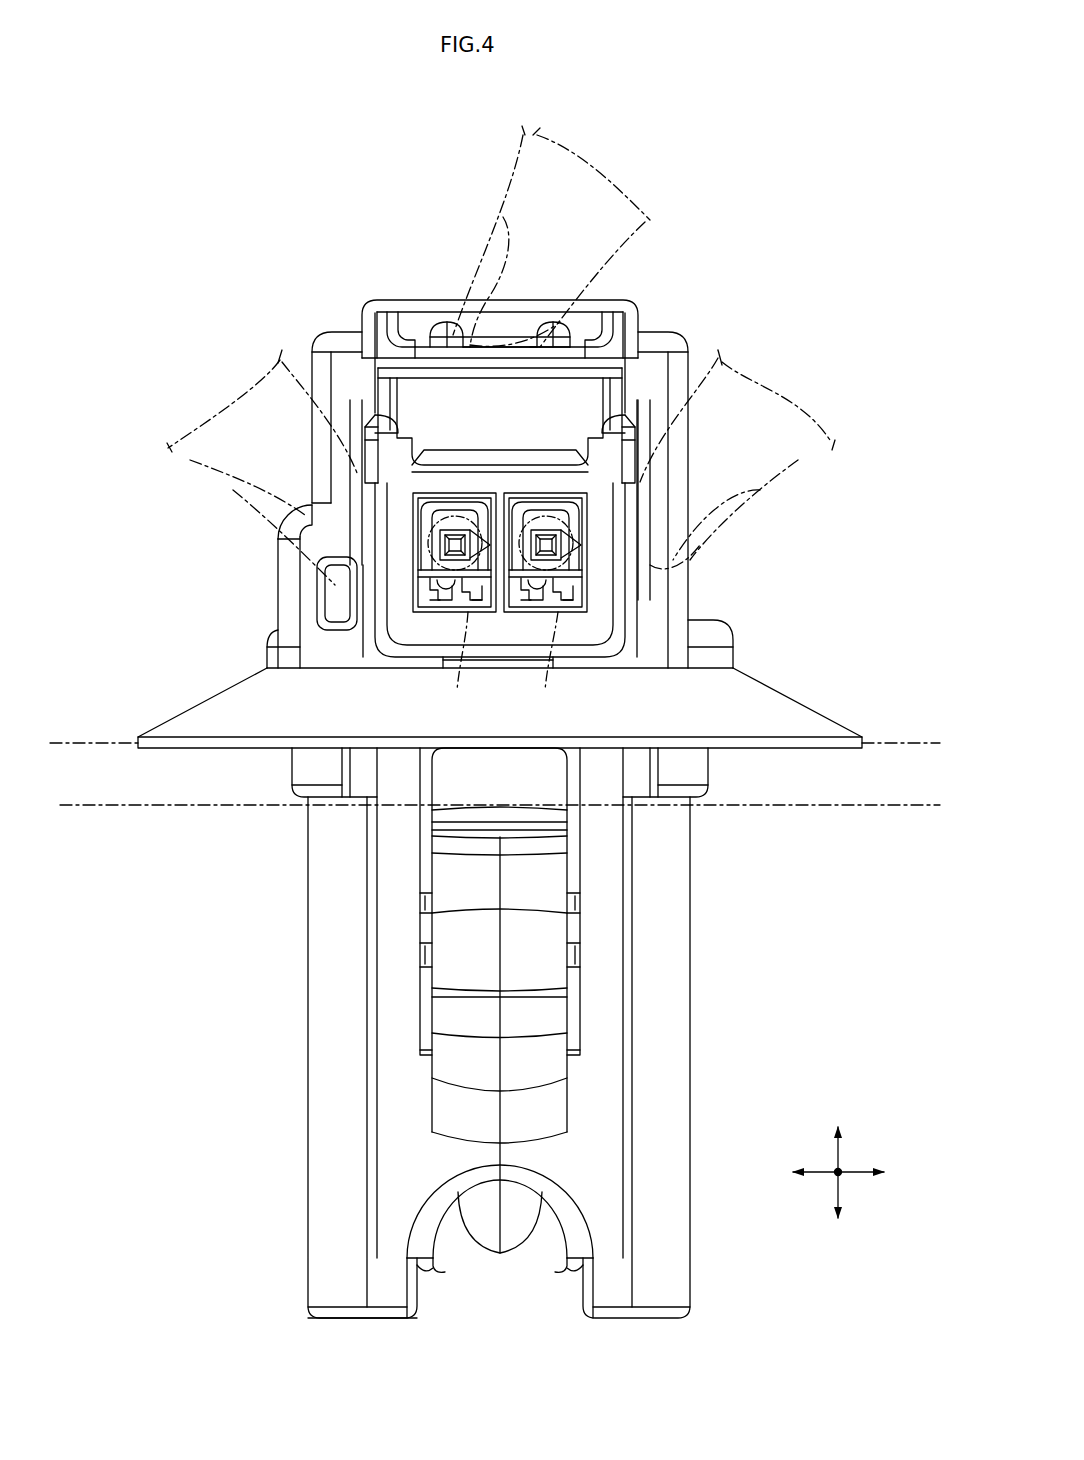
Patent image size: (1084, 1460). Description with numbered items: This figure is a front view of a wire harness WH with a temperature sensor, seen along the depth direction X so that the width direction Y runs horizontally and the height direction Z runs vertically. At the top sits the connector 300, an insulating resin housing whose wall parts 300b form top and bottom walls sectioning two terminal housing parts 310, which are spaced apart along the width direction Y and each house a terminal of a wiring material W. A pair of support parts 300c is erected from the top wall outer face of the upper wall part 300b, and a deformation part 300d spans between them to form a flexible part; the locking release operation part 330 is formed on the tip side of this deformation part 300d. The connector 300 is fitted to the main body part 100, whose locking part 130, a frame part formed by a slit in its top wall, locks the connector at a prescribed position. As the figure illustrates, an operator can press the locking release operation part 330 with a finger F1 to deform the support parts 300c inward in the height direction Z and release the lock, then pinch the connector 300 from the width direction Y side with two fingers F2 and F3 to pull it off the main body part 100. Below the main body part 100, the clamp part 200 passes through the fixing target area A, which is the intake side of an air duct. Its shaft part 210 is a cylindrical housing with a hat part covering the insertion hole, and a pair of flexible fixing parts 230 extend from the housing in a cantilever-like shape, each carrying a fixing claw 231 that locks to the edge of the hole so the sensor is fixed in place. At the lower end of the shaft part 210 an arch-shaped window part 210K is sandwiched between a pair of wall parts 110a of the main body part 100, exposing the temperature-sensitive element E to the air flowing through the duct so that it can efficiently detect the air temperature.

The wire harness WH is at (205, 138).
The finger F1 is at (518, 175).
The finger F2 is at (200, 486).
The finger F3 is at (827, 480).
The main body part 100 is at (300, 320).
The locking part 130 is at (418, 290).
The locking release operation part 330 is at (480, 338).
The connector 300 is at (600, 636).
The wall part 300b is at (505, 475).
The support part 300c is at (380, 405).
The deformation part 300d is at (540, 362).
The terminal housing part 310 is at (572, 583).
The wiring material W is at (536, 668).
The fixing target area A is at (105, 806).
The clamp part 200 is at (797, 888).
The shaft part 210 is at (712, 957).
The window part 210K is at (425, 1288).
The fixing part 230 is at (558, 879).
The fixing claw 231 is at (553, 818).
The wall part 110a is at (442, 1272).
The temperature-sensitive element E is at (528, 1250).
The depth direction X is at (838, 1172).
The width direction Y is at (861, 1172).
The height direction Z is at (838, 1140).